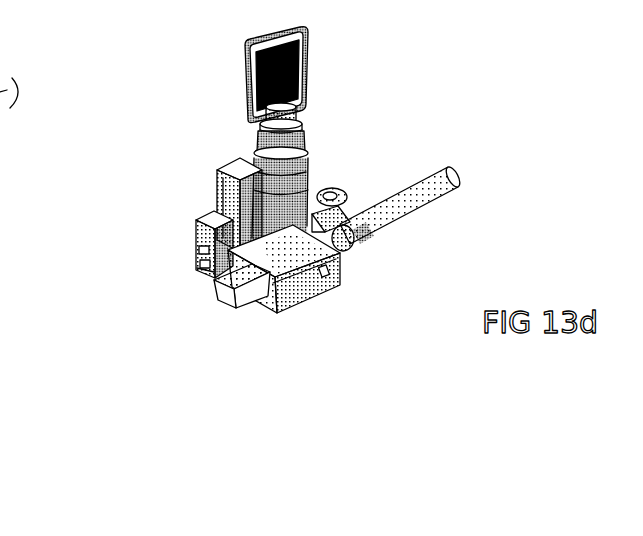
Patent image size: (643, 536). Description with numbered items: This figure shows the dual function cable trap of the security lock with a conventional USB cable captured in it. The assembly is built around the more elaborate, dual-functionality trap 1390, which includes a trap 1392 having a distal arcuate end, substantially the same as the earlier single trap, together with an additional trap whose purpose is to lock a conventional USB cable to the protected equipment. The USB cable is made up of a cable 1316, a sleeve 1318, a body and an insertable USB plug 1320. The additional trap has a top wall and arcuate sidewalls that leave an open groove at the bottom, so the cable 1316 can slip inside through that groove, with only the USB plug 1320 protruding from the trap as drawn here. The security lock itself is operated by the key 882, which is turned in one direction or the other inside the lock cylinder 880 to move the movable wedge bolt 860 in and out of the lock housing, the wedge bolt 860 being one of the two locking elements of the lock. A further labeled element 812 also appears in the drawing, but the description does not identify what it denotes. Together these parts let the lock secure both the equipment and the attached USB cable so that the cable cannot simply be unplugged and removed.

The key 882 is at (302, 138).
The lock cylinder 880 is at (303, 150).
The trap 1392 is at (215, 197).
The wedge bolt 860 is at (197, 258).
The connector port 812 is at (197, 270).
The USB plug 1320 is at (255, 307).
The dual-functionality trap 1390 is at (318, 293).
The sleeve 1318 is at (347, 250).
The cable 1316 is at (440, 195).